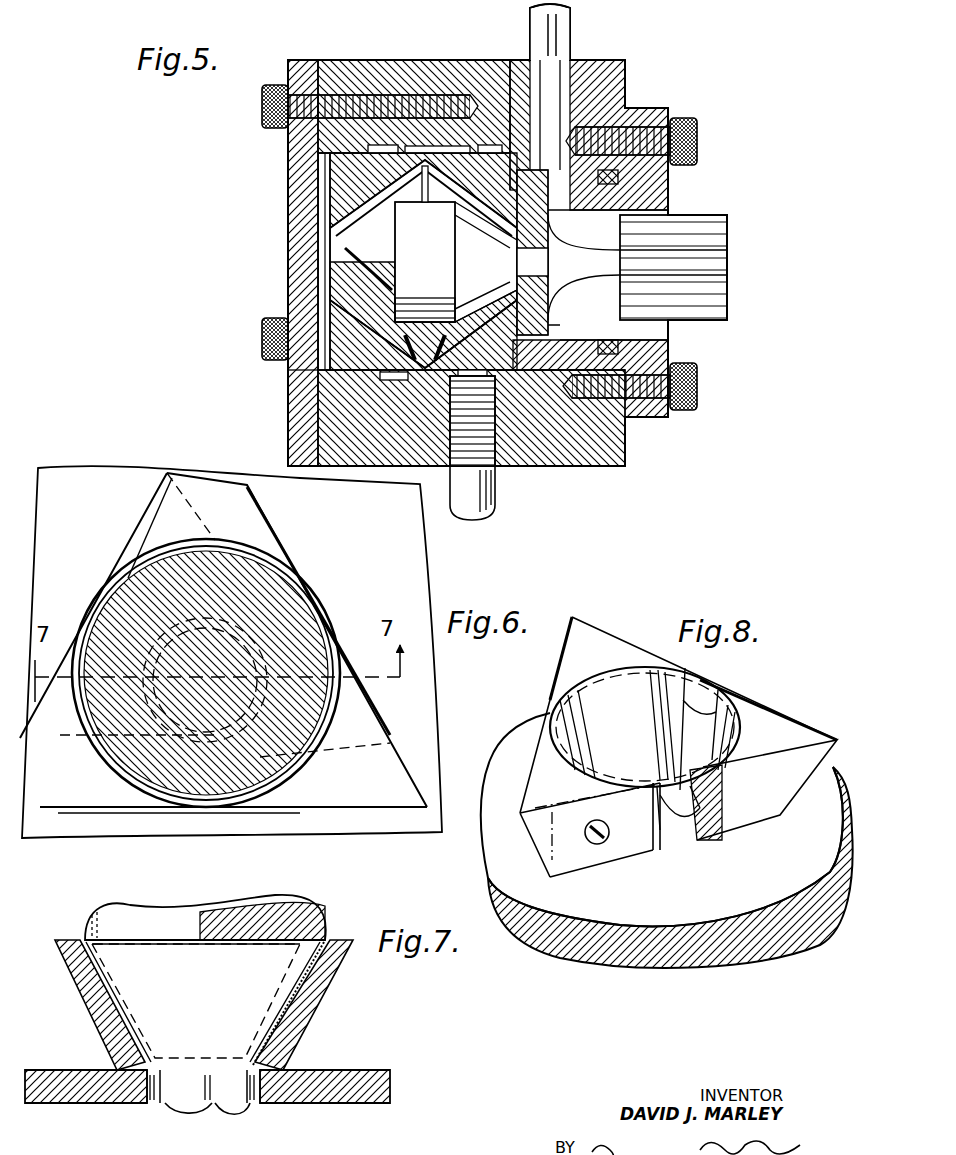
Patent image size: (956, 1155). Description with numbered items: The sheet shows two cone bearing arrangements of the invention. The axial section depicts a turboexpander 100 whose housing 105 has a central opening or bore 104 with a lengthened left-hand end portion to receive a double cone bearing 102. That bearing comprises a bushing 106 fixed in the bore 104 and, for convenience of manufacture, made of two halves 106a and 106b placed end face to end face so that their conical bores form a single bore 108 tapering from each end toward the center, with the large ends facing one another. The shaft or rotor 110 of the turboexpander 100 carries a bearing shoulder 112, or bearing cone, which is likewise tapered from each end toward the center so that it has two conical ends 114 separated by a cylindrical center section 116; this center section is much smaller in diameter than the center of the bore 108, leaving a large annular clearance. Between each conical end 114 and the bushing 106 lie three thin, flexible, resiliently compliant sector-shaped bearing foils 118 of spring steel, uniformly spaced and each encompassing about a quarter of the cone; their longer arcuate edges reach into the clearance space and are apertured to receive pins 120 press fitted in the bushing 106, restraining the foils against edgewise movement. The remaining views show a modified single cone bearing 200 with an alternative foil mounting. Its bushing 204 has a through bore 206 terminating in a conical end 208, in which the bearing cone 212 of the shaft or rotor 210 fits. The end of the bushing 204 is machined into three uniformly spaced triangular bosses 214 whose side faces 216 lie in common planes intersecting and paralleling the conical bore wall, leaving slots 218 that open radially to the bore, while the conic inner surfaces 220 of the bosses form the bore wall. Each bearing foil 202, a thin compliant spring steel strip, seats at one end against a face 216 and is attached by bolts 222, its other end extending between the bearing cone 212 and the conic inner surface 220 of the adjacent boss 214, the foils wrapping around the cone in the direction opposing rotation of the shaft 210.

In FIG. 5, the turboexpander 100 is at (627, 54).
In FIG. 5, the double cone bearing 102 is at (328, 357).
In FIG. 5, the central opening or bore 104 is at (338, 157).
In FIG. 5, the housing 105 is at (592, 458).
In FIG. 5, the bushing 106 is at (357, 193).
In FIG. 5, the bushing half 106a is at (377, 193).
In FIG. 5, the bushing half 106b is at (478, 198).
In FIG. 5, the bore 108 is at (352, 293).
In FIG. 5, the shaft or rotor 110 is at (525, 262).
In FIG. 5, the bearing shoulder 112 is at (330, 263).
In FIG. 5, the conical ends 114 is at (468, 268).
In FIG. 5, the cylindrical center section 116 is at (440, 253).
In FIG. 5, the bearing foils 118 is at (442, 198).
In FIG. 5, the pins 120 is at (405, 378).
In FIG. 6, the cone bearing 200 is at (412, 712).
In FIG. 6, the bearing foils 202 is at (90, 620).
In FIG. 7, the bushing 204 is at (297, 1027).
In FIG. 8, the bushing 204 is at (668, 905).
In FIG. 7, the bore 206 is at (245, 1100).
In FIG. 8, the bore 206 is at (690, 830).
In FIG. 7, the conical end 208 is at (97, 977).
In FIG. 6, the shaft or rotor 210 is at (143, 572).
In FIG. 7, the shaft or rotor 210 is at (322, 905).
In FIG. 8, the shaft or rotor 210 is at (645, 727).
In FIG. 7, the bearing cone 212 is at (153, 993).
In FIG. 6, the triangular bosses 214 is at (265, 517).
In FIG. 8, the triangular bosses 214 is at (590, 650).
In FIG. 6, the side faces 216 is at (170, 473).
In FIG. 8, the side faces 216 is at (572, 617).
In FIG. 8, the slots 218 is at (715, 700).
In FIG. 8, the conic inner surfaces 220 is at (672, 690).
In FIG. 8, the bolts 222 is at (598, 845).